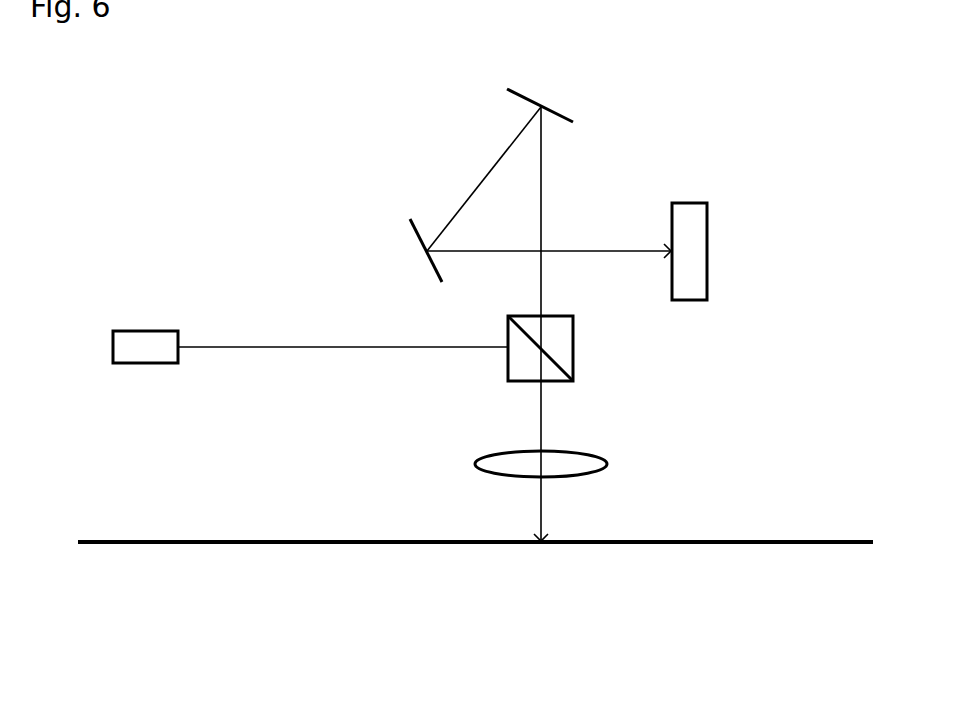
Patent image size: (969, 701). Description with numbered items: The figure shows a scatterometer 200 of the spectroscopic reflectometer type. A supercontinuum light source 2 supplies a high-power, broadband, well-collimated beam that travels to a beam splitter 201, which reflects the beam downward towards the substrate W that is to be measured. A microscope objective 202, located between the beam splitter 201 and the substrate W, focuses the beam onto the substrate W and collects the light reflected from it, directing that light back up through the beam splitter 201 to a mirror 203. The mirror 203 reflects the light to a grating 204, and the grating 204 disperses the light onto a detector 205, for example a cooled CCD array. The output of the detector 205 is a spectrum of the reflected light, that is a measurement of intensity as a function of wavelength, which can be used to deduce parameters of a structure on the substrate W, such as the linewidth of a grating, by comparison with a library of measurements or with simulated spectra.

The supercontinuum light source 2 is at (151, 331).
The scatterometer 200 is at (263, 169).
The beam splitter 201 is at (573, 348).
The microscope objective 202 is at (606, 463).
The mirror 203 is at (530, 100).
The grating 204 is at (418, 246).
The detector 205 is at (707, 237).
The substrate W is at (228, 540).